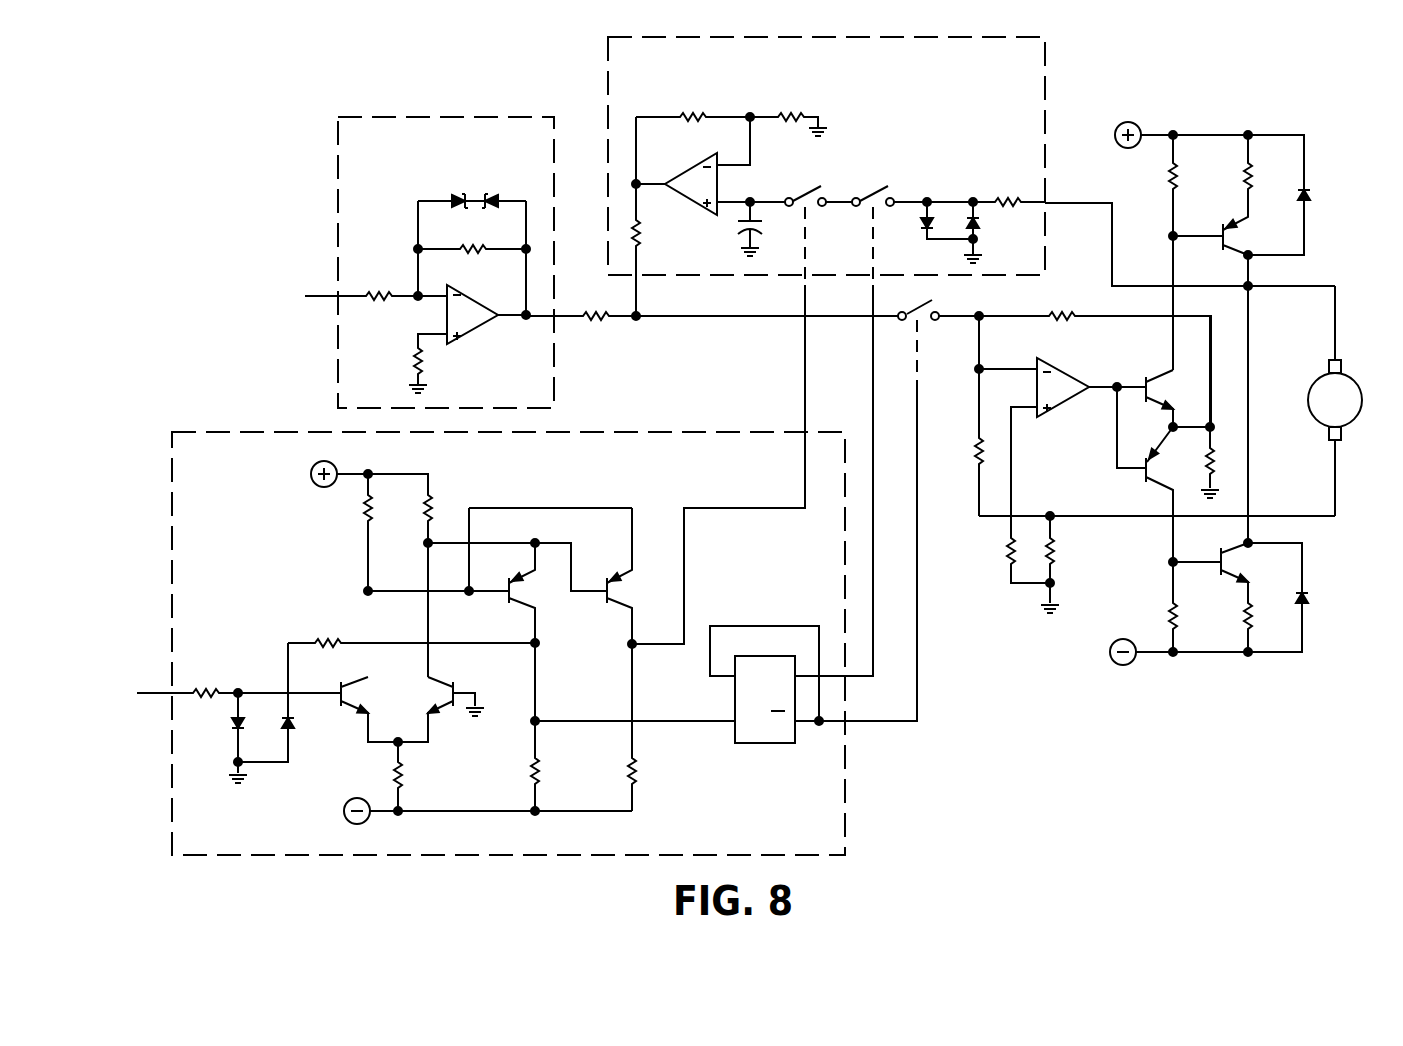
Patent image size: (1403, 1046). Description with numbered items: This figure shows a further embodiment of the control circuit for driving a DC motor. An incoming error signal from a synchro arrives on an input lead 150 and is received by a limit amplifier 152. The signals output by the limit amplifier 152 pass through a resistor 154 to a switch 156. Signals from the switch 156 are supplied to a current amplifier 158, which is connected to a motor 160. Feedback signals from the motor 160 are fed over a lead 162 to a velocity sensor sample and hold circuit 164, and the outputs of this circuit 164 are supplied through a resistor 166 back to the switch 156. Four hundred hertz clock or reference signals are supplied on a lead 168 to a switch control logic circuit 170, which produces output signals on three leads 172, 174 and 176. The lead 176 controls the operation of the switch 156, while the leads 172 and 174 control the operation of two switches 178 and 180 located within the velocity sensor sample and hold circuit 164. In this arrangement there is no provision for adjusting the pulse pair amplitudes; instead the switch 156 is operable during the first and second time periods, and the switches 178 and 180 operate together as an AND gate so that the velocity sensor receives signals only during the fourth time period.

The input lead 150 is at (322, 296).
The limit amplifier 152 is at (478, 117).
The resistor 154 is at (595, 320).
The switch 156 is at (946, 303).
The current amplifier 158 is at (1046, 646).
The motor 160 is at (1360, 450).
The lead 162 is at (1078, 203).
The velocity sensor sample and hold circuit 164 is at (1045, 103).
The resistor 166 is at (647, 228).
The lead 168 is at (158, 688).
The switch control logic circuit 170 is at (172, 543).
The lead 172 is at (805, 403).
The lead 174 is at (873, 403).
The lead 176 is at (917, 551).
The switch 178 is at (814, 176).
The switch 180 is at (879, 174).